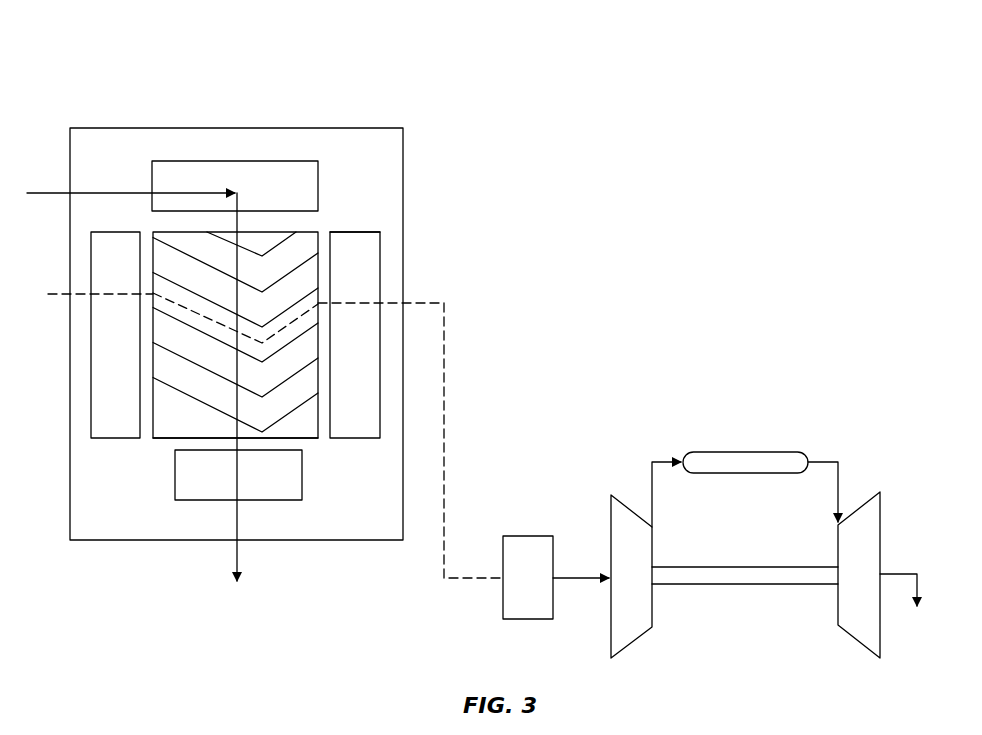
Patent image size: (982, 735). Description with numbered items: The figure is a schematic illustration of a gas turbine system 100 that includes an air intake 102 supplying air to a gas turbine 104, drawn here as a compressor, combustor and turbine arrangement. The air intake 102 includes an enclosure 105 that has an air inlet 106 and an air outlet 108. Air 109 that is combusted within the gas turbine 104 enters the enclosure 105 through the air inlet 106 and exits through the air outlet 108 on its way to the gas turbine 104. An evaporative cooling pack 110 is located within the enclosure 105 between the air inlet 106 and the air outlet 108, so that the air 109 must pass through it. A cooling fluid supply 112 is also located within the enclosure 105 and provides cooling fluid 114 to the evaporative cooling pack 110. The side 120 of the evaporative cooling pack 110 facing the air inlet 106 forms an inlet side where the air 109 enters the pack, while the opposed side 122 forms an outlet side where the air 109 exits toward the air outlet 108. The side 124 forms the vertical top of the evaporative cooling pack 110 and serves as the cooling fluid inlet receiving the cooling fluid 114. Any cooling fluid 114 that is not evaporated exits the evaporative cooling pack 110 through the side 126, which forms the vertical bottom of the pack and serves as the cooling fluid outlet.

The gas turbine system 100 is at (741, 185).
The air intake 102 is at (431, 87).
The gas turbine 104 is at (716, 399).
The enclosure 105 is at (403, 278).
The air inlet 106 is at (91, 402).
The air outlet 108 is at (355, 438).
The air 109 is at (444, 375).
The evaporative cooling pack 110 is at (188, 408).
The cooling fluid supply 112 is at (267, 161).
The cooling fluid 114 is at (118, 193).
The side 120 is at (153, 258).
The opposed side 122 is at (348, 232).
The side 124 is at (275, 232).
The side 126 is at (187, 438).